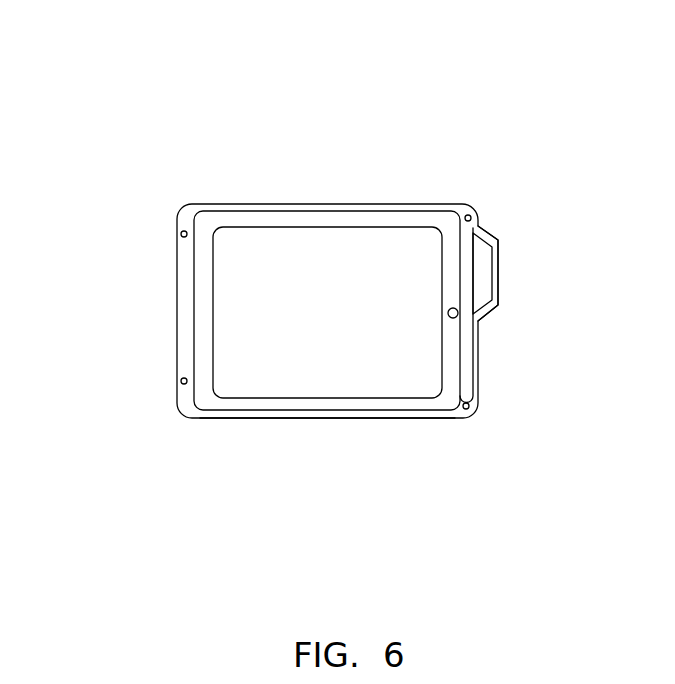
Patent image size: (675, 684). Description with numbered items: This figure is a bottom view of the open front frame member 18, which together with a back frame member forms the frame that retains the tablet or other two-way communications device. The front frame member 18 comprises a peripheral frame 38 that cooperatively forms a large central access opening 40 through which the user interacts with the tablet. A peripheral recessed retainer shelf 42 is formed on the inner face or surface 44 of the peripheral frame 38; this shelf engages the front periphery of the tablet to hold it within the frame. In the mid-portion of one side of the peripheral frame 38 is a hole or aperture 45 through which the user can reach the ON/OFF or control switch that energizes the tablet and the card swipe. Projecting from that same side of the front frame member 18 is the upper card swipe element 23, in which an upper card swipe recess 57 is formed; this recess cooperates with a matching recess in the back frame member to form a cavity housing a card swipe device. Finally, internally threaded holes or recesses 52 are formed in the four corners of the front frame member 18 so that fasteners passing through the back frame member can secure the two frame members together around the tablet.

The front frame member 18 is at (352, 181).
The upper card swipe element 23 is at (487, 235).
The peripheral frame 38 is at (354, 418).
The access opening 40 is at (277, 369).
The peripheral recessed retainer shelf 42 is at (204, 321).
The inner face 44 is at (186, 286).
The hole or aperture 45 is at (460, 319).
The internally threaded holes 52 is at (181, 229).
The upper card swipe recess 57 is at (486, 268).